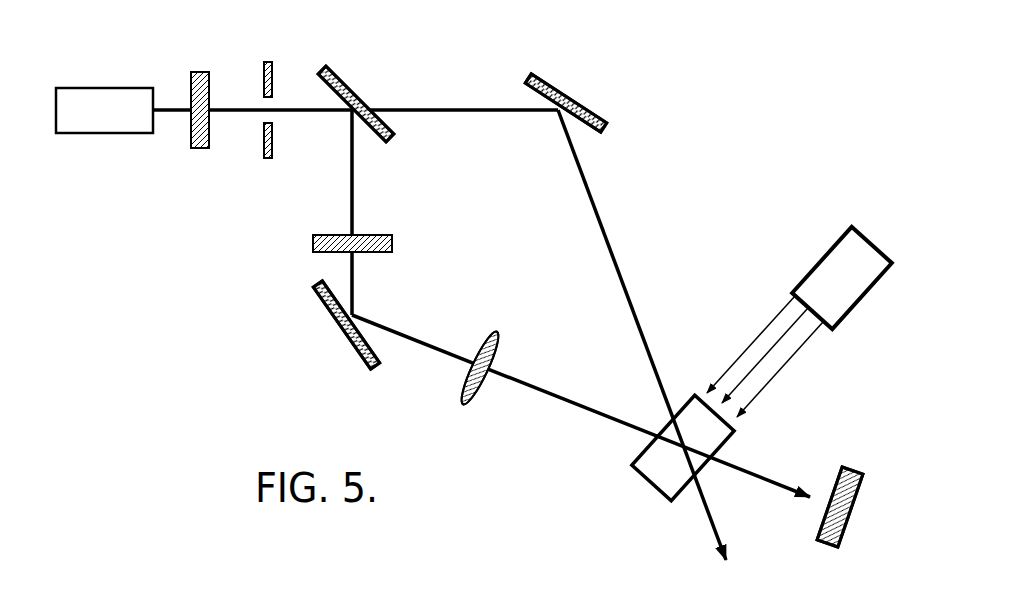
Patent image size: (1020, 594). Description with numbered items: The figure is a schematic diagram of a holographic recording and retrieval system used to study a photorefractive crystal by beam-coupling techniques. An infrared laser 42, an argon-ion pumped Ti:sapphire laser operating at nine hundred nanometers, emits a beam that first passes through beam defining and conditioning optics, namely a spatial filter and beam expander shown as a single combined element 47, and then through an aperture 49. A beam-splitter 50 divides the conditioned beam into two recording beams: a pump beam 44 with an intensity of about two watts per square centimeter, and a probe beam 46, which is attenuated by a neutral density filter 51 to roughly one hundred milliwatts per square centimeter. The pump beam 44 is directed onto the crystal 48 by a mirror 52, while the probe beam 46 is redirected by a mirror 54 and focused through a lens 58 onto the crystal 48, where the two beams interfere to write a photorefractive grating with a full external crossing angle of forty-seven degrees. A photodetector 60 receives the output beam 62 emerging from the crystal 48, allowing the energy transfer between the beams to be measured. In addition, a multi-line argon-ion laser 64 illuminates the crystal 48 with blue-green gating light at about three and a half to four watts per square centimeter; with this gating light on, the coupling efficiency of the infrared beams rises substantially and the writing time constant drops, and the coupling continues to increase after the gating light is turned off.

The infrared laser 42 is at (55, 134).
The pump recording beam 44 is at (631, 291).
The probe recording beam 46 is at (352, 219).
The combined spatial filter and beam expander 47 is at (194, 150).
The crystal 48 is at (666, 500).
The aperture 49 is at (264, 62).
The beam-splitter 50 is at (328, 67).
The neutral density filter 51 is at (393, 238).
The mirror 52 is at (611, 122).
The mirror 54 is at (319, 305).
The lens 58 is at (474, 400).
The photodetector 60 is at (860, 474).
The output beam 62 is at (758, 476).
The Ar+-ion laser 64 is at (880, 258).